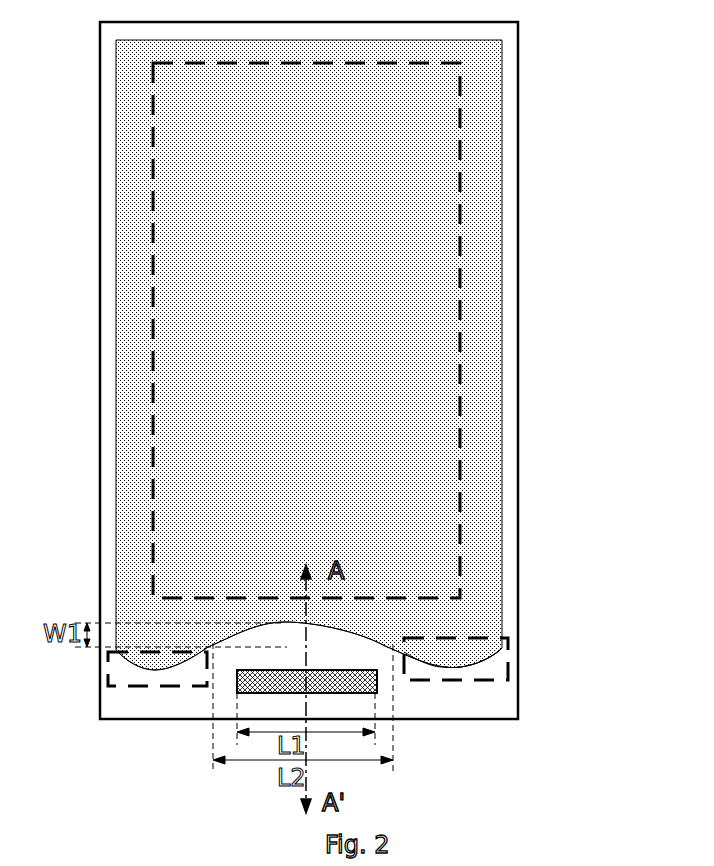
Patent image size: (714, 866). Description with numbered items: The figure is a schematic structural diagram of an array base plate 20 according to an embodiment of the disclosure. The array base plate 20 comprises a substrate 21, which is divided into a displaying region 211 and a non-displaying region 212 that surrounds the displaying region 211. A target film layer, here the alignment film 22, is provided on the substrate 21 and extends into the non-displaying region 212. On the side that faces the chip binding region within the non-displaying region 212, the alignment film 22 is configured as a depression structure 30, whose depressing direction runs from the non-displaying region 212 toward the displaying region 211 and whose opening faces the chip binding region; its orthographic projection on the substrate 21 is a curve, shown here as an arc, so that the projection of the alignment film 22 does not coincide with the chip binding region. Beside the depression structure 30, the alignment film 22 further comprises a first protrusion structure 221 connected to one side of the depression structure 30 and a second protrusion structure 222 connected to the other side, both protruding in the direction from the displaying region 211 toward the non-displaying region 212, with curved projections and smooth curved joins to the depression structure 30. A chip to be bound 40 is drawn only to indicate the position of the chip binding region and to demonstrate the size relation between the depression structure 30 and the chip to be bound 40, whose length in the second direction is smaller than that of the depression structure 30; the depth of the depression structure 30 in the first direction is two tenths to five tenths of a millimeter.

The array base plate 20 is at (379, 397).
The substrate 21 is at (518, 225).
The alignment film 22 is at (502, 408).
The displaying region 211 is at (459, 357).
The non-displaying region 212 is at (498, 692).
The first protrusion structure 221 is at (167, 686).
The second protrusion structure 222 is at (483, 680).
The depression structure 30 is at (287, 642).
The chip to be bound 40 is at (377, 694).